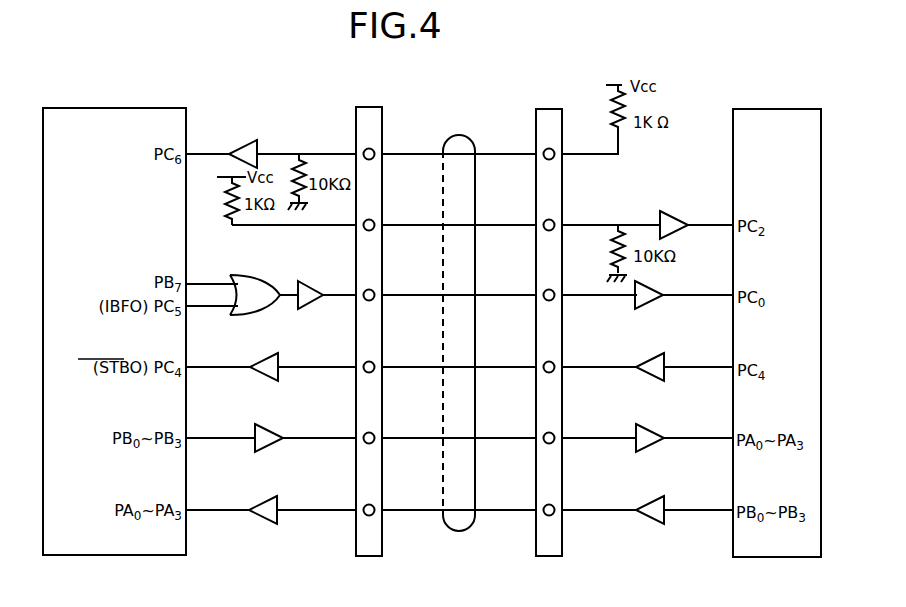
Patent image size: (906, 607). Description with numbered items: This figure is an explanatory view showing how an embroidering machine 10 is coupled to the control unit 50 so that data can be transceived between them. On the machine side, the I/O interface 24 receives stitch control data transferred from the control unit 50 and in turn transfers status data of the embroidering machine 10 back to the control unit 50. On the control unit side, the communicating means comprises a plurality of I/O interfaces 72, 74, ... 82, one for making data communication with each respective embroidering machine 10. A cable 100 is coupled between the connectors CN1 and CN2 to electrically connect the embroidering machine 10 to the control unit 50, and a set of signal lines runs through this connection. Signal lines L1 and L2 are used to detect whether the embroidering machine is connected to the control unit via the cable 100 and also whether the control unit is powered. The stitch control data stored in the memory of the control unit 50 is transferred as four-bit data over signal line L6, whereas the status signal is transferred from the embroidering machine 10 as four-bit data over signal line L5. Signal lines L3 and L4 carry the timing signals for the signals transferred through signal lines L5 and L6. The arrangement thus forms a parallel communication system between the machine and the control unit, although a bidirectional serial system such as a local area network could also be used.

The embroidering machine 10 is at (191, 98).
The I/O interface 24 is at (111, 107).
The control unit 50 is at (703, 111).
The I/O interface 72 is at (771, 108).
The I/O interface 74 is at (777, 333).
The I/O interface 82 is at (777, 333).
The cable 100 is at (452, 133).
The connector CN1 is at (369, 106).
The connector CN2 is at (552, 107).
The signal line L1 is at (410, 152).
The signal line L2 is at (410, 223).
The signal line L3 is at (410, 293).
The signal line L4 is at (410, 365).
The signal line L5 is at (410, 436).
The signal line L6 is at (410, 508).